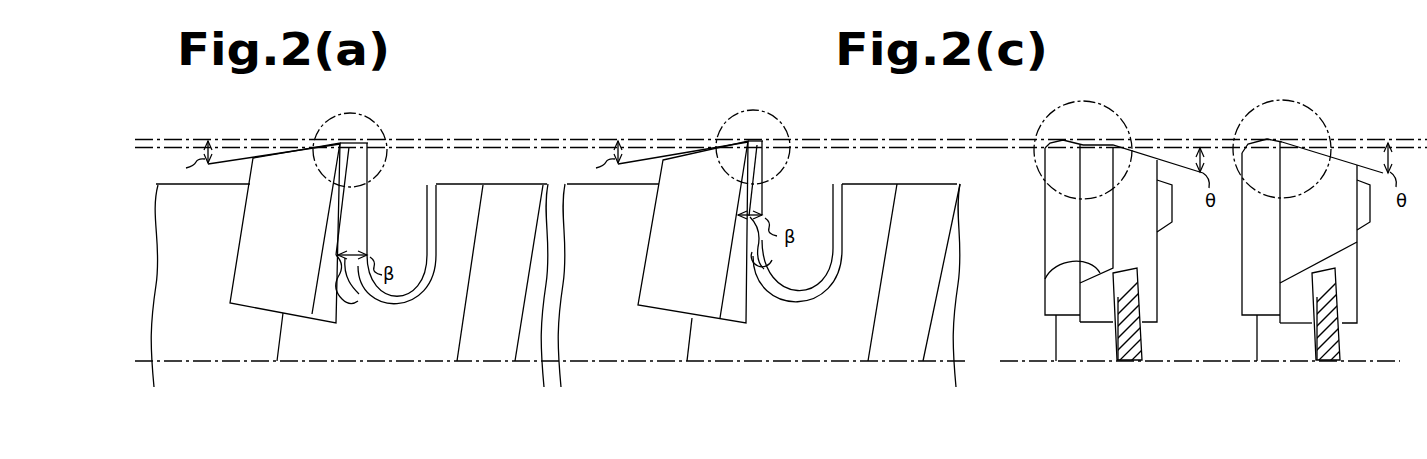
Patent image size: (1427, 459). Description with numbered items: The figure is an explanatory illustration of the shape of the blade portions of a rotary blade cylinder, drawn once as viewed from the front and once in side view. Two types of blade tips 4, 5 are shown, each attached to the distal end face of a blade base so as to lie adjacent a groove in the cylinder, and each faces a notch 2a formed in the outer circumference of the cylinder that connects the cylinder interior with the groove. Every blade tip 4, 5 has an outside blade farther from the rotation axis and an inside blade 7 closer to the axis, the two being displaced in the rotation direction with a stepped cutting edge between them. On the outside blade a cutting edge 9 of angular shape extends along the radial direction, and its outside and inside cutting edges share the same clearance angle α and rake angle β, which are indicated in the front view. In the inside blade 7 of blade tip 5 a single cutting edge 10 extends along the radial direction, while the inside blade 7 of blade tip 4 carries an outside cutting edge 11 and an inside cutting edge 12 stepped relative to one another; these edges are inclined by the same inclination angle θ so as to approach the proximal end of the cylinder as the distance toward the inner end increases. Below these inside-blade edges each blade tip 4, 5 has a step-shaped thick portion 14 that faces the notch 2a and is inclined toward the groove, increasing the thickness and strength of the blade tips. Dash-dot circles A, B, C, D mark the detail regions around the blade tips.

In FIG. 2A, the notch 2a is at (410, 224).
In FIG. 2A, the blade tip 4 is at (266, 227).
In FIG. 2C, the blade tip 4 is at (1063, 242).
In FIG. 2A, the blade tip 5 is at (673, 235).
In FIG. 2C, the blade tip 5 is at (1272, 243).
In FIG. 2A, the thick portion 14 is at (337, 292).
In FIG. 2C, the thick portion 14 is at (1045, 279).
In FIG. 2C, the inside blade 7 is at (1141, 174).
In FIG. 2C, the cutting edge 9 is at (1047, 145).
In FIG. 2C, the cutting edge 10 is at (1340, 152).
In FIG. 2C, the outside cutting edge 11 is at (1093, 147).
In FIG. 2C, the inside cutting edge 12 is at (1148, 147).
In FIG. 2A, the detail circle A is at (373, 116).
In FIG. 2A, the detail circle B is at (770, 112).
In FIG. 2C, the detail circle C is at (1076, 100).
In FIG. 2C, the detail circle D is at (1308, 104).